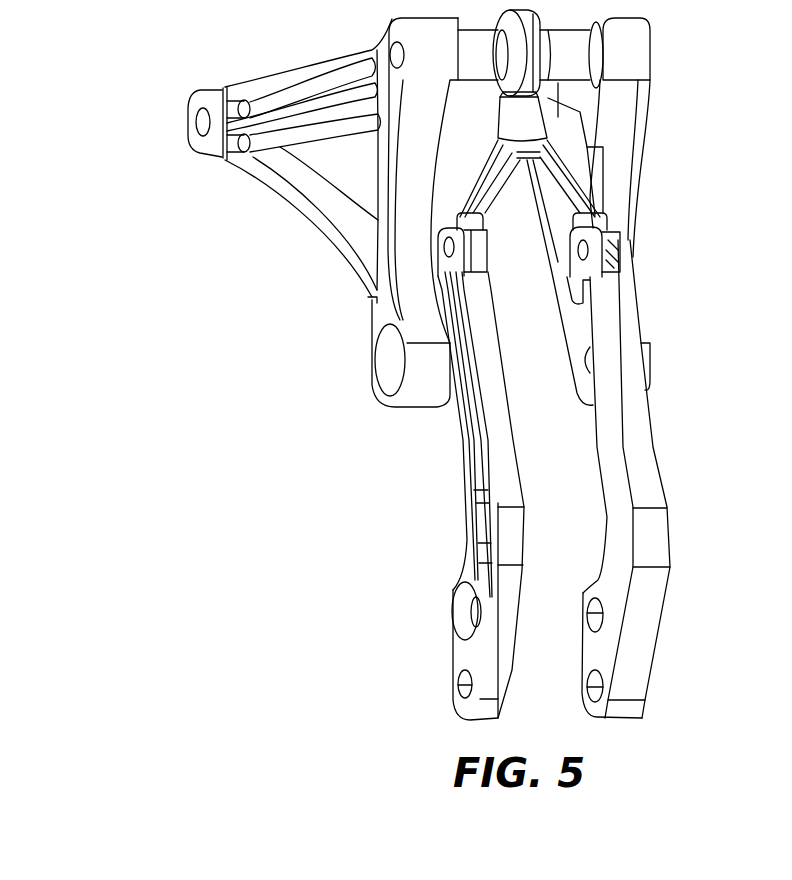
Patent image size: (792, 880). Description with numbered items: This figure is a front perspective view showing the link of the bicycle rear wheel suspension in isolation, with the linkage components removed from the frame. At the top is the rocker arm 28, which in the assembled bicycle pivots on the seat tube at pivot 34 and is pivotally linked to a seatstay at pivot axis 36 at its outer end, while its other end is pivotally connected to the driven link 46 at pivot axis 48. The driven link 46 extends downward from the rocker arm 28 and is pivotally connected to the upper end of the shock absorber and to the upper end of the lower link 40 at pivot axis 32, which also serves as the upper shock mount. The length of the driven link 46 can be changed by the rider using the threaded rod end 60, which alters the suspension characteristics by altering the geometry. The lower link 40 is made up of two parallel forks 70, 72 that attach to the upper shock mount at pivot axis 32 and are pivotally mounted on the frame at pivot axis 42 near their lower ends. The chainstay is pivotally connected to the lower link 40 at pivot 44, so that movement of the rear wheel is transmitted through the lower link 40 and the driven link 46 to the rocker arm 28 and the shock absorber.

The rocker arm 28 is at (252, 198).
The pivot axis 32 is at (578, 253).
The pivot 34 is at (385, 375).
The pivot axis 36 is at (193, 122).
The lower link 40 is at (480, 723).
The pivot axis 42 is at (481, 618).
The pivot 44 is at (473, 685).
The driven link 46 is at (495, 180).
The pivot axis 48 is at (653, 50).
The threaded rod end 60 is at (497, 100).
The fork 70 is at (455, 445).
The fork 72 is at (677, 507).